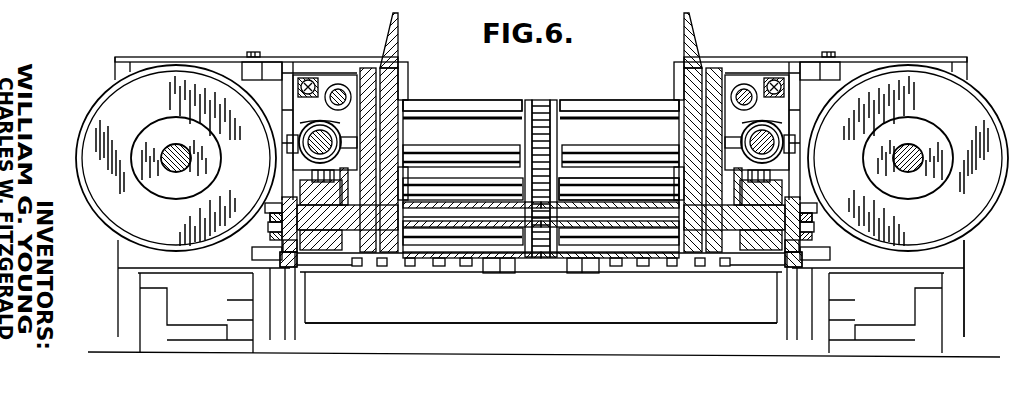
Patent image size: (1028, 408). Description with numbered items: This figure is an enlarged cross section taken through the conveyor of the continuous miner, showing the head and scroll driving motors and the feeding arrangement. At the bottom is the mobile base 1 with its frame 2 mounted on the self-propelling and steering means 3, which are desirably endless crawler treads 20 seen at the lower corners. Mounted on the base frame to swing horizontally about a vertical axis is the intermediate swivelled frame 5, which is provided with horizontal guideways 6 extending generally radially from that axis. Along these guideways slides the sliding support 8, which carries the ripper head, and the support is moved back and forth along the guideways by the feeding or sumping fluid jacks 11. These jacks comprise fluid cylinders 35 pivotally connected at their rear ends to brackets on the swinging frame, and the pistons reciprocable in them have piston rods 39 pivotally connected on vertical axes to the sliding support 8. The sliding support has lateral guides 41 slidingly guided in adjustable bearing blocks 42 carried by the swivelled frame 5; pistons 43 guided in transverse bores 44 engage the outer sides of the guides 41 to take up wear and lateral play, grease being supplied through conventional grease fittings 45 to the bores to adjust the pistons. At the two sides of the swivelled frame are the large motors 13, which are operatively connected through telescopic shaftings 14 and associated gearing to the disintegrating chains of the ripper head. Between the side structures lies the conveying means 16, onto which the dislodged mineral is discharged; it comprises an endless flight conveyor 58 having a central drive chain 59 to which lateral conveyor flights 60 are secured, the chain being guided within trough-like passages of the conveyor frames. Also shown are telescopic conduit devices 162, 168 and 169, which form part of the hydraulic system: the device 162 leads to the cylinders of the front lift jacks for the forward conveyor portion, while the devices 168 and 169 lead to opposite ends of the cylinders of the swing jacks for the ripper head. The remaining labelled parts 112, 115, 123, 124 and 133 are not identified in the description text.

The mobile base 1 is at (967, 298).
The frame 2 is at (538, 305).
The self-propelling and steering means 3 is at (273, 360).
The intermediate swivelled frame 5 is at (787, 272).
The horizontal guideways 6 is at (300, 258).
The sliding support 8 is at (378, 70).
The fluid jacks 11 is at (300, 127).
The motors 13 is at (82, 125).
The telescopic shaftings 14 is at (174, 176).
The conveying means 16 is at (605, 91).
The endless crawler treads 20 is at (200, 317).
The fluid cylinders 35 is at (541, 140).
The piston rods 39 is at (318, 150).
The lateral guides 41 is at (318, 272).
The adjustable bearing blocks 42 is at (340, 236).
The pistons 43 is at (833, 312).
The transverse bores 44 is at (290, 208).
The grease fittings 45 is at (283, 222).
The endless flight conveyor 58 is at (507, 118).
The central drive chain 59 is at (560, 135).
The lateral conveyor flights 60 is at (642, 193).
The arm 112 is at (607, 7).
The arm 115 is at (824, 12).
The link 123 is at (659, 0).
The link 124 is at (659, 29).
The lever 133 is at (697, 7).
The telescopic conduit device 162 is at (300, 76).
The telescopic conduit device 168 is at (750, 90).
The telescopic conduit device 169 is at (333, 85).